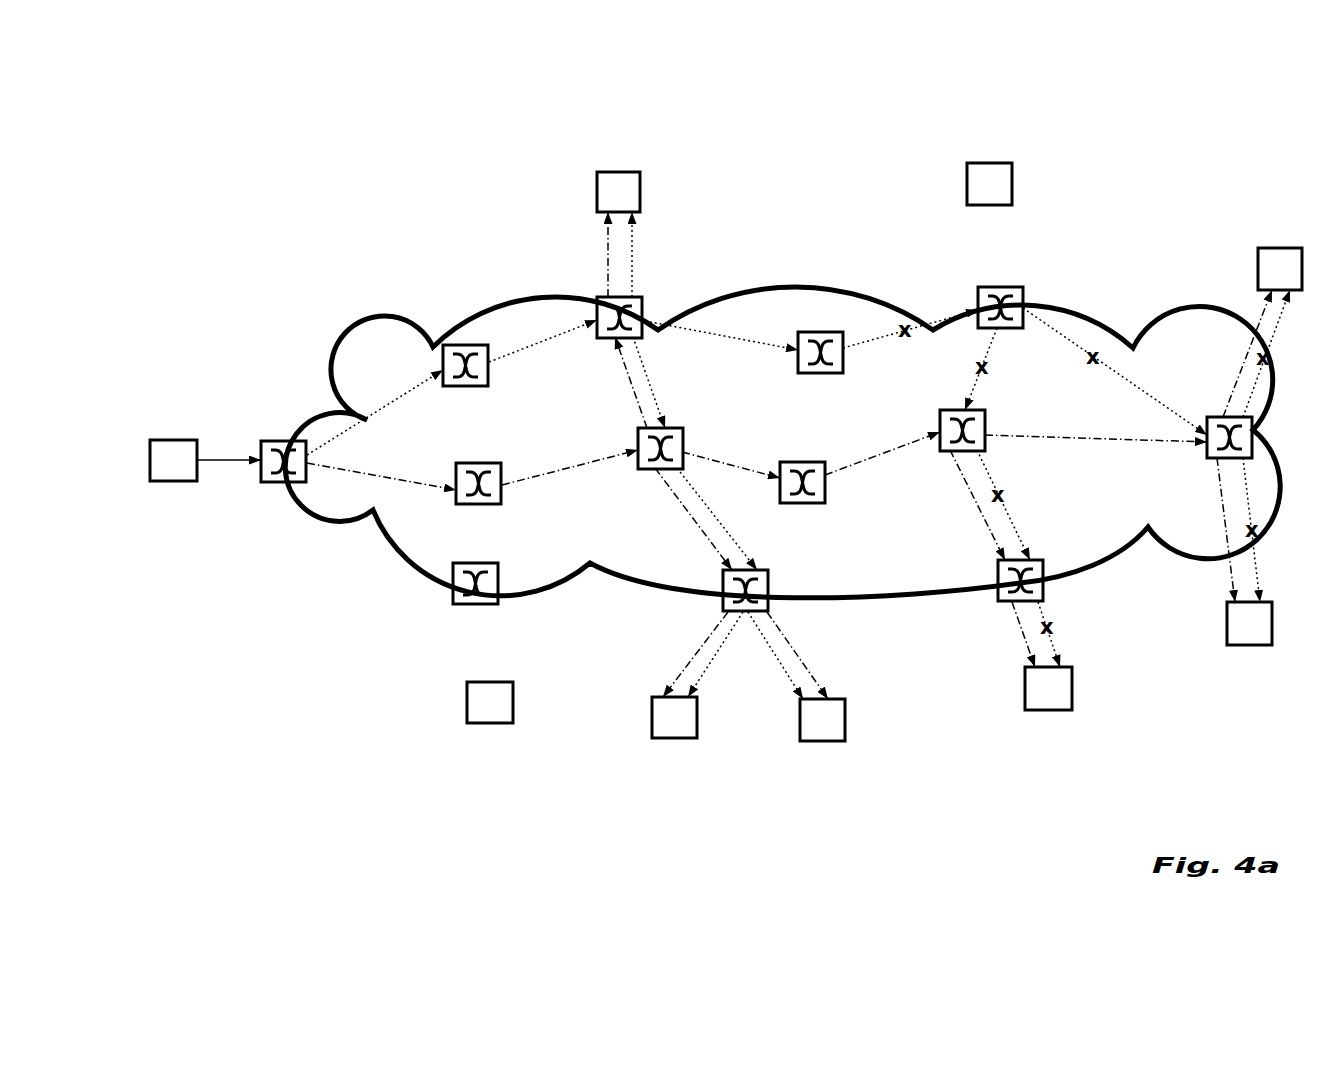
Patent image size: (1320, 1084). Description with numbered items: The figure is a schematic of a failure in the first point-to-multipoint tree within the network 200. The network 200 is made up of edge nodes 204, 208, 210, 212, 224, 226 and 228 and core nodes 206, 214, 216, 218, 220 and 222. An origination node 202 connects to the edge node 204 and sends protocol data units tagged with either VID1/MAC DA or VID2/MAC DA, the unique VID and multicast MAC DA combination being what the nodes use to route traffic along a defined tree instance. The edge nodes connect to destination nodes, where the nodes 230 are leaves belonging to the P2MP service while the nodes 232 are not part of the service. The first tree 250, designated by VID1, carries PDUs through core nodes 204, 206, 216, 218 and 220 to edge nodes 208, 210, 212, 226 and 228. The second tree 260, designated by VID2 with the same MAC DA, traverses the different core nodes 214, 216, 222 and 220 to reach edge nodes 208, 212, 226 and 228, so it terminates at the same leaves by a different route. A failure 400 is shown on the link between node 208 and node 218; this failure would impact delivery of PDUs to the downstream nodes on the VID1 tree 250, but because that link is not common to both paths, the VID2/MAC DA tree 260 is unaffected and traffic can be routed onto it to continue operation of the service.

The network 200 is at (460, 297).
The origination node 202 is at (163, 440).
The edge node 204 is at (283, 481).
The core node 206 is at (478, 387).
The edge node 208 is at (597, 303).
The edge node 210 is at (978, 295).
The edge node 212 is at (1207, 448).
The core node 214 is at (460, 465).
The core node 216 is at (640, 468).
The core node 218 is at (808, 373).
The core node 220 is at (940, 417).
The core node 222 is at (808, 503).
The edge node 224 is at (453, 585).
The edge node 226 is at (727, 611).
The edge node 228 is at (998, 585).
The destination nodes 230 is at (597, 190).
The destination nodes 232 is at (967, 182).
The tree 250 is at (385, 378).
The tree 260 is at (347, 480).
The failure 400 is at (755, 323).